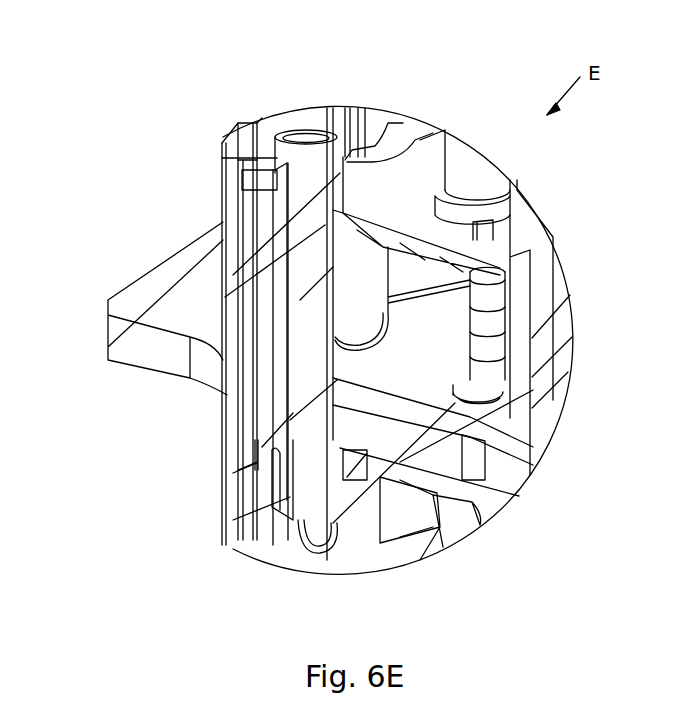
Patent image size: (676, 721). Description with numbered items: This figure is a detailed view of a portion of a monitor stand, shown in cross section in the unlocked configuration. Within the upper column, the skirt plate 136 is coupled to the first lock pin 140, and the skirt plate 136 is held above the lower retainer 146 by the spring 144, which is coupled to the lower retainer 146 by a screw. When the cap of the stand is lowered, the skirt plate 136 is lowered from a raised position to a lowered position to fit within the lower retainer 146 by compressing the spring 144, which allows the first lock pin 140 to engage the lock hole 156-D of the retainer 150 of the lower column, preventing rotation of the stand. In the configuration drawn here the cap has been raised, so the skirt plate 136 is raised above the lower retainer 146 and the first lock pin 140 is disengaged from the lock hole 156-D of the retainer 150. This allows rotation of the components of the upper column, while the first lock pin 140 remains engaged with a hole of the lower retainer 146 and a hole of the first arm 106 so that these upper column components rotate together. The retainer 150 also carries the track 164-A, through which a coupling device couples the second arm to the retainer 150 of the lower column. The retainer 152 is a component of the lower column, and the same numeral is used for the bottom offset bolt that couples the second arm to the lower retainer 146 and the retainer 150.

The first arm 106 is at (120, 290).
The skirt plate 136 is at (415, 172).
The first lock pin 140 is at (300, 232).
The spring 144 is at (482, 280).
The lower retainer 146 is at (423, 373).
The retainer 150 is at (490, 512).
The retainer 152 is at (548, 337).
The lock hole 156-D is at (310, 487).
The track 164-A is at (352, 460).